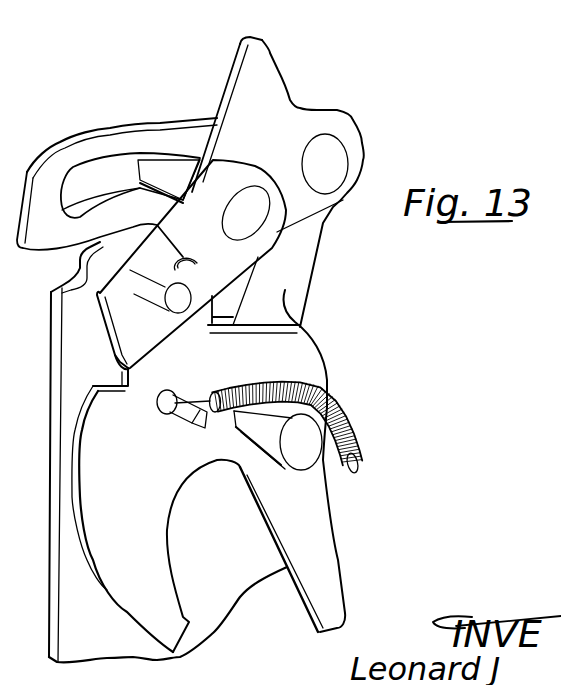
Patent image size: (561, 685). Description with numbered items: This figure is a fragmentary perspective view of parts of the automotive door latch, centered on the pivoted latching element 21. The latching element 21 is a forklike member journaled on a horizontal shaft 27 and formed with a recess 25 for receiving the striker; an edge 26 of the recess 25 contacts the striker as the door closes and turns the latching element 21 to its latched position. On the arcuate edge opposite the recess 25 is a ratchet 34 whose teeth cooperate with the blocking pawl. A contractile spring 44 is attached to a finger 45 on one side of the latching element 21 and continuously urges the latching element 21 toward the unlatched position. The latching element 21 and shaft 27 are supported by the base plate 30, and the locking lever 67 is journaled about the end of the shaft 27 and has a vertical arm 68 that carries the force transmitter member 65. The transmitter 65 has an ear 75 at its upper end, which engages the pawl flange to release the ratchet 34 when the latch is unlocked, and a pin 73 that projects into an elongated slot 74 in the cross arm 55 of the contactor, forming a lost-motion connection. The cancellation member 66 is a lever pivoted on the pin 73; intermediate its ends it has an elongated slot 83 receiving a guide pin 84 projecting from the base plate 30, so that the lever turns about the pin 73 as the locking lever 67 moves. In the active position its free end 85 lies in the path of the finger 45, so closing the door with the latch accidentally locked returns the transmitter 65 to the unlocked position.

The latching element 21 is at (73, 492).
The recess 25 is at (197, 615).
The edge 26 is at (292, 595).
The shaft 27 is at (303, 462).
The base plate 30 is at (62, 322).
The ratchet 34 is at (108, 370).
The contractile spring 44 is at (335, 408).
The finger 45 is at (183, 421).
The cross arm 55 is at (135, 133).
The force transmitter member 65 is at (285, 73).
The cancellation member 66 is at (218, 287).
The locking lever 67 is at (314, 260).
The vertical arm 68 is at (321, 232).
The pin 73 is at (170, 160).
The elongated slot 74 is at (100, 163).
The ear 75 is at (263, 51).
The elongated slot 83 is at (187, 257).
The guide pin 84 is at (187, 315).
The free end 85 is at (118, 356).